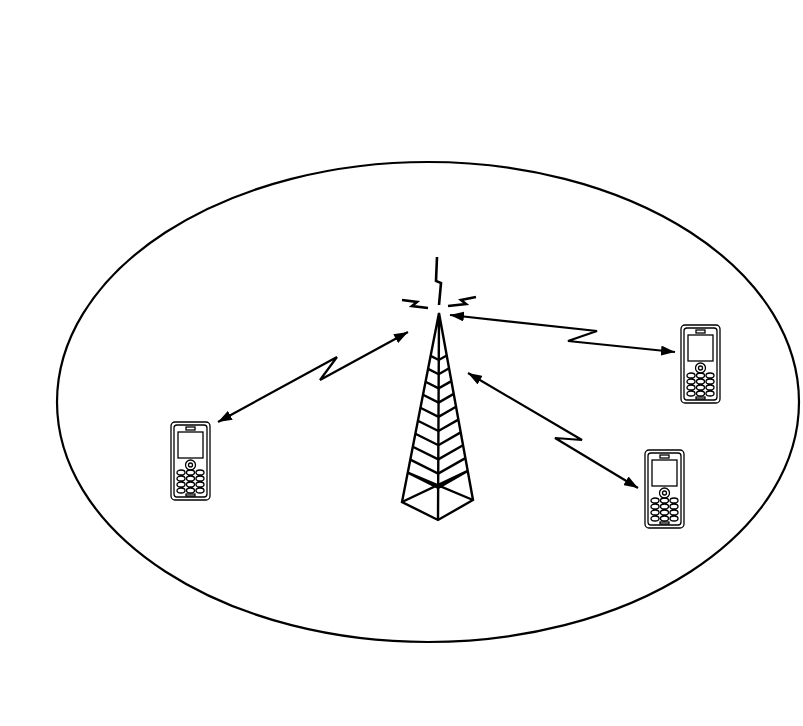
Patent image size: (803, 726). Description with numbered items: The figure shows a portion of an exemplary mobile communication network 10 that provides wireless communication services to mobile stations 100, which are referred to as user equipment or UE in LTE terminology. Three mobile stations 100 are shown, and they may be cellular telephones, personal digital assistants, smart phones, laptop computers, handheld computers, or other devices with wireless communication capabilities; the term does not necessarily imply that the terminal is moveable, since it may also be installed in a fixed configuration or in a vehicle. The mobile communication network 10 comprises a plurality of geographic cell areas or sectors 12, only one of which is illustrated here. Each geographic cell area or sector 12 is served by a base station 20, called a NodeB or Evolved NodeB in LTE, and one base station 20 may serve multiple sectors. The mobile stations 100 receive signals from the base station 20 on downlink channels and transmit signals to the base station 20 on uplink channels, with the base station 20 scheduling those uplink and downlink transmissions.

The mobile communication network 10 is at (590, 66).
The geographic cell area or sector 12 is at (628, 199).
The base station 20 is at (473, 478).
The mobile station 100 is at (720, 390).